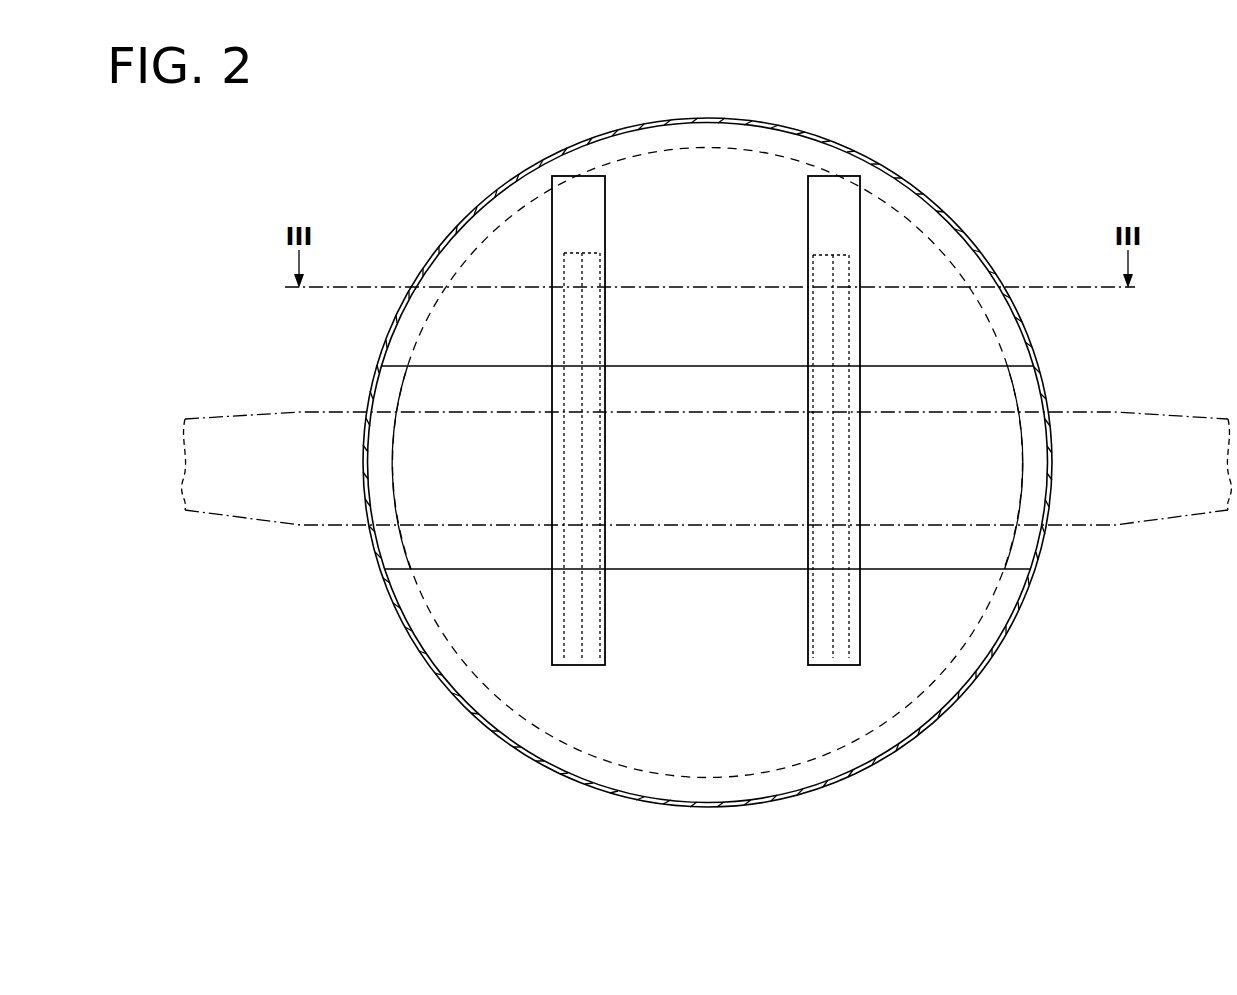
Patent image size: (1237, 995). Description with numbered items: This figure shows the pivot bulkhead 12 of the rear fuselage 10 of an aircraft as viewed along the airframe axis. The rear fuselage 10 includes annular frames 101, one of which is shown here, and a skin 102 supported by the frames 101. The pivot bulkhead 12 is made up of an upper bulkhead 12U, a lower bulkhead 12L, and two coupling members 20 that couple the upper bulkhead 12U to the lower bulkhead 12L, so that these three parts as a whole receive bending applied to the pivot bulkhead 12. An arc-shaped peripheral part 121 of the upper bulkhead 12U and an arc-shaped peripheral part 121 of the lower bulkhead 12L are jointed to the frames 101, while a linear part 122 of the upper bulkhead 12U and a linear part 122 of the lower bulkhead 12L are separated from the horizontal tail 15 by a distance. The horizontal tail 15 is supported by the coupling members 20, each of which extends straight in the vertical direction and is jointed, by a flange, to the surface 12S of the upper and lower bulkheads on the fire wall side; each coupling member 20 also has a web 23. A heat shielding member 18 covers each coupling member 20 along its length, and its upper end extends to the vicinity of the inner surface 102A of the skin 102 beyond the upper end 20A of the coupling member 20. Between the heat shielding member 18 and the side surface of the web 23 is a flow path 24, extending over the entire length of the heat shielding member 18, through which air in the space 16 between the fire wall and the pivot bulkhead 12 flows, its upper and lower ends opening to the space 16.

The rear fuselage 10 is at (920, 176).
The pivot bulkhead 12 is at (650, 176).
The surface of the upper and lower bulkhead on the fire wall side 12S is at (715, 775).
The upper bulkhead 12U is at (517, 367).
The lower bulkhead 12L is at (432, 568).
The horizontal tail 15 is at (288, 404).
The space 16 is at (704, 679).
The heat shielding member 18 is at (598, 236).
The coupling member 20 is at (608, 345).
The upper end of the coupling member 20A is at (572, 255).
The web 23 is at (595, 490).
The flow path 24 is at (598, 606).
The annular frame 101 is at (1020, 460).
The skin 102 is at (742, 117).
The inner surface of the skin 102A is at (715, 124).
The arc-shaped peripheral part 121 is at (497, 200).
The linear part 122 is at (700, 367).